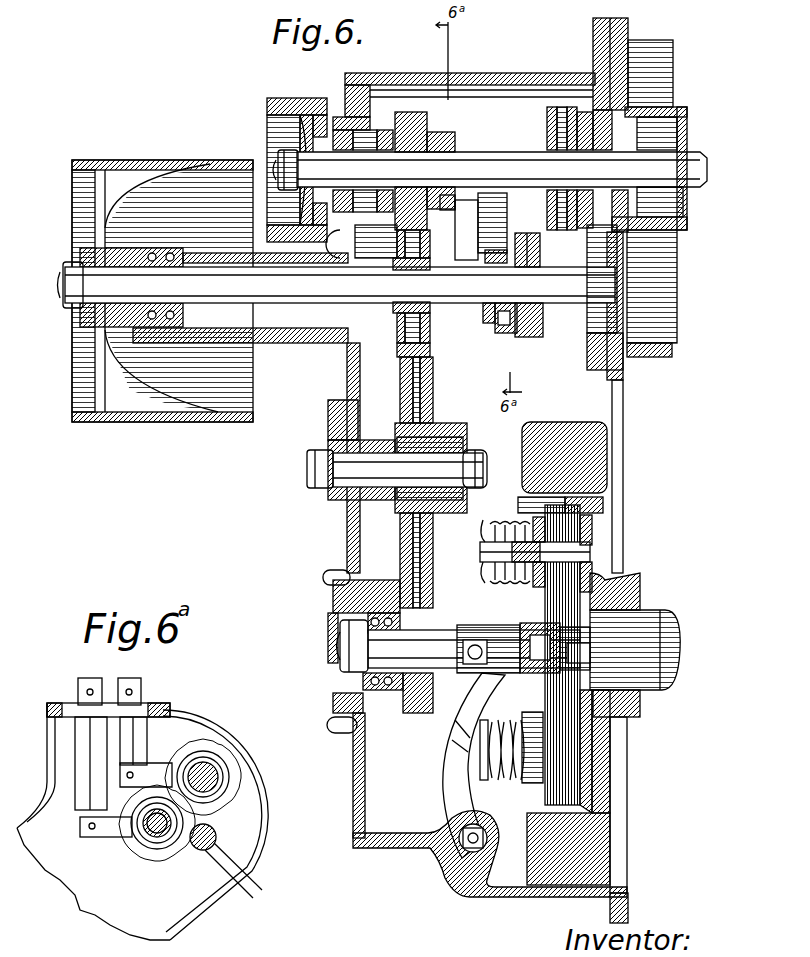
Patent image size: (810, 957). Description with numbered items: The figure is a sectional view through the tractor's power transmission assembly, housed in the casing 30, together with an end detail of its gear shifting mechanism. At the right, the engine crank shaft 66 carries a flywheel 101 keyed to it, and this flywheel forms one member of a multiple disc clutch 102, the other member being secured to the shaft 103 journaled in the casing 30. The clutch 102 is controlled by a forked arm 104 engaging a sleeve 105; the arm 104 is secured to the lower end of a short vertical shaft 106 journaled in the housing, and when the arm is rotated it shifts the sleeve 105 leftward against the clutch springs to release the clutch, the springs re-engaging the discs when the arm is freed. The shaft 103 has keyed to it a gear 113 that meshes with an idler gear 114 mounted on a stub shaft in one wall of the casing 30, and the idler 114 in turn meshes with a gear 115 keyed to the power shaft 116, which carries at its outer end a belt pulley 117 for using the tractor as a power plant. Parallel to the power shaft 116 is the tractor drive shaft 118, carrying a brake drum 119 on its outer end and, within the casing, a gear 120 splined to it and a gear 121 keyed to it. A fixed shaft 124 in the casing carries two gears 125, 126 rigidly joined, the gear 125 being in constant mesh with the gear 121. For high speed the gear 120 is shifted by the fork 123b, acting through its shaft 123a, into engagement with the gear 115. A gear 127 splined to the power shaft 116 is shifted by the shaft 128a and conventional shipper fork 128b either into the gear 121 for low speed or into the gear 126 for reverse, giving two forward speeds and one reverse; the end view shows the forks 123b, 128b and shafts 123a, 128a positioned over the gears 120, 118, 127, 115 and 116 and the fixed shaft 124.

In FIG. 6, the transmission casing 30 is at (432, 74).
In FIG. 6, the brake drum 119 is at (268, 104).
In FIG. 6, the gear 120 is at (428, 125).
In FIG. 6A, the gear 120 is at (228, 754).
In FIG. 6, the gear 121 is at (560, 110).
In FIG. 6, the tractor drive shaft 118 is at (487, 141).
In FIG. 6A, the tractor drive shaft 118 is at (214, 781).
In FIG. 6, the fork 123b is at (402, 232).
In FIG. 6A, the fork 123b is at (152, 778).
In FIG. 6, the gear 126 is at (490, 236).
In FIG. 6, the power shaft 116 is at (378, 305).
In FIG. 6A, the power shaft 116 is at (143, 828).
In FIG. 6, the gear 115 is at (433, 304).
In FIG. 6A, the gear 115 is at (157, 837).
In FIG. 6, the shipper fork 128b is at (496, 328).
In FIG. 6A, the shipper fork 128b is at (82, 826).
In FIG. 6, the gear 125 is at (560, 265).
In FIG. 6, the gear 127 is at (510, 330).
In FIG. 6A, the gear 127 is at (150, 840).
In FIG. 6, the idler gear 114 is at (430, 410).
In FIG. 6, the belt pulley 117 is at (193, 423).
In FIG. 6, the gear 113 is at (433, 602).
In FIG. 6, the shaft 103 is at (445, 633).
In FIG. 6, the flywheel 101 is at (640, 590).
In FIG. 6, the engine crank shaft 66 is at (673, 632).
In FIG. 6, the sleeve 105 is at (538, 675).
In FIG. 6, the forked arm 104 is at (445, 790).
In FIG. 6, the multiple disc clutch 102 is at (548, 795).
In FIG. 6, the short vertical shaft 106 is at (482, 852).
In FIG. 6A, the shaft 128a is at (90, 678).
In FIG. 6A, the shaft 123a is at (133, 678).
In FIG. 6A, the fixed shaft 124 is at (214, 833).